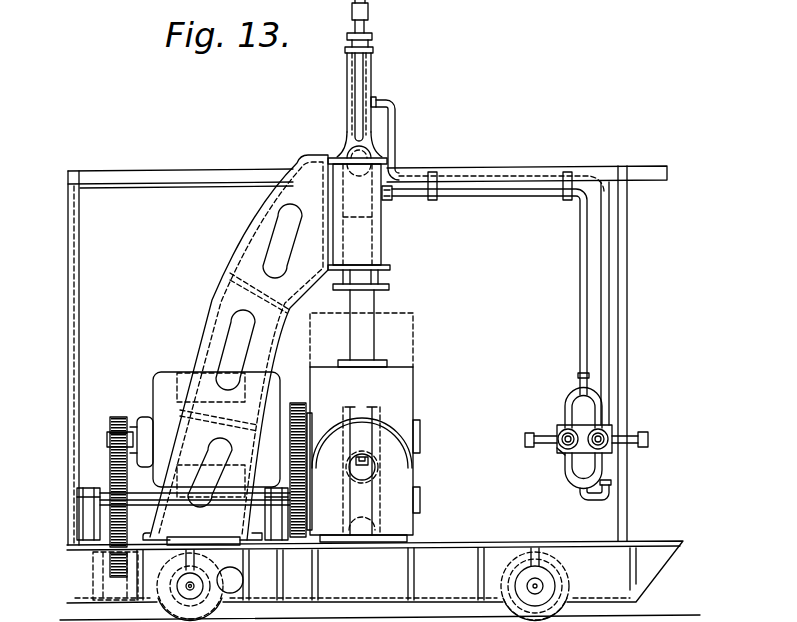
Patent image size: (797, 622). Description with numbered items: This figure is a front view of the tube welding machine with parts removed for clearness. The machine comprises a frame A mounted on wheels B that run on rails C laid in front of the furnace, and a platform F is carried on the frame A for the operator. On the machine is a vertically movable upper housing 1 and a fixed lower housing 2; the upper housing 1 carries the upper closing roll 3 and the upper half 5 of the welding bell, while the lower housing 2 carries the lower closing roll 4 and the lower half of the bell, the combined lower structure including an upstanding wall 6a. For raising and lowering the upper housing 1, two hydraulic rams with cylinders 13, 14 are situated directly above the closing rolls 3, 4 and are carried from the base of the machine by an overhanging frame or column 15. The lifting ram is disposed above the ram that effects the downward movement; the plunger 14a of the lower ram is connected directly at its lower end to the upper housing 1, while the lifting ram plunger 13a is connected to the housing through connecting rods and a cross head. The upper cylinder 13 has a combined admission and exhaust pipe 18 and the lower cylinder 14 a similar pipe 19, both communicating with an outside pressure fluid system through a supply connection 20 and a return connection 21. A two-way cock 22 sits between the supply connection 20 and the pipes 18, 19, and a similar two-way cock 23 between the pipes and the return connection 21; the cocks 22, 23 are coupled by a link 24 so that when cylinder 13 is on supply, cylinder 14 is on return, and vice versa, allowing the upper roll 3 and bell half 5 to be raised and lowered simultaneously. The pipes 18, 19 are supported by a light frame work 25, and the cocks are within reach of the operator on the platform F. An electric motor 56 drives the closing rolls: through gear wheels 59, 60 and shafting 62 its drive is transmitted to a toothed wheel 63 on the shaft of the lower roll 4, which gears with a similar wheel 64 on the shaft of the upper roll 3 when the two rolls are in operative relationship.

The upper cylinder 13 is at (348, 88).
The lifting ram plunger 13a is at (370, 87).
The combined admission and exhaust pipe 18 is at (397, 150).
The combined admission and exhaust pipe 19 is at (532, 192).
The lower cylinder 14 is at (383, 236).
The plunger 14a is at (380, 252).
The light frame work 25 is at (165, 180).
The overhanging frame or column 15 is at (222, 302).
The electric motor 56 is at (167, 388).
The gear wheel 59 is at (118, 417).
The gear wheel 60 is at (115, 470).
The shafting 62 is at (115, 521).
The toothed wheel 63 is at (293, 527).
The toothed wheel 64 is at (298, 410).
The upstanding wall 6a is at (319, 471).
The upper housing 1 is at (365, 427).
The lower housing 2 is at (371, 471).
The upper closing roll 3 is at (378, 418).
The lower closing roll 4 is at (380, 517).
The upper half of the welding bell 5 is at (400, 433).
The supply connection 20 is at (538, 432).
The return connection 21 is at (640, 443).
The two-way cock 22 is at (560, 448).
The two-way cock 23 is at (613, 428).
The link 24 is at (618, 467).
The platform F is at (520, 539).
The frame A is at (445, 576).
The rails C is at (327, 619).
The wheels B is at (157, 600).